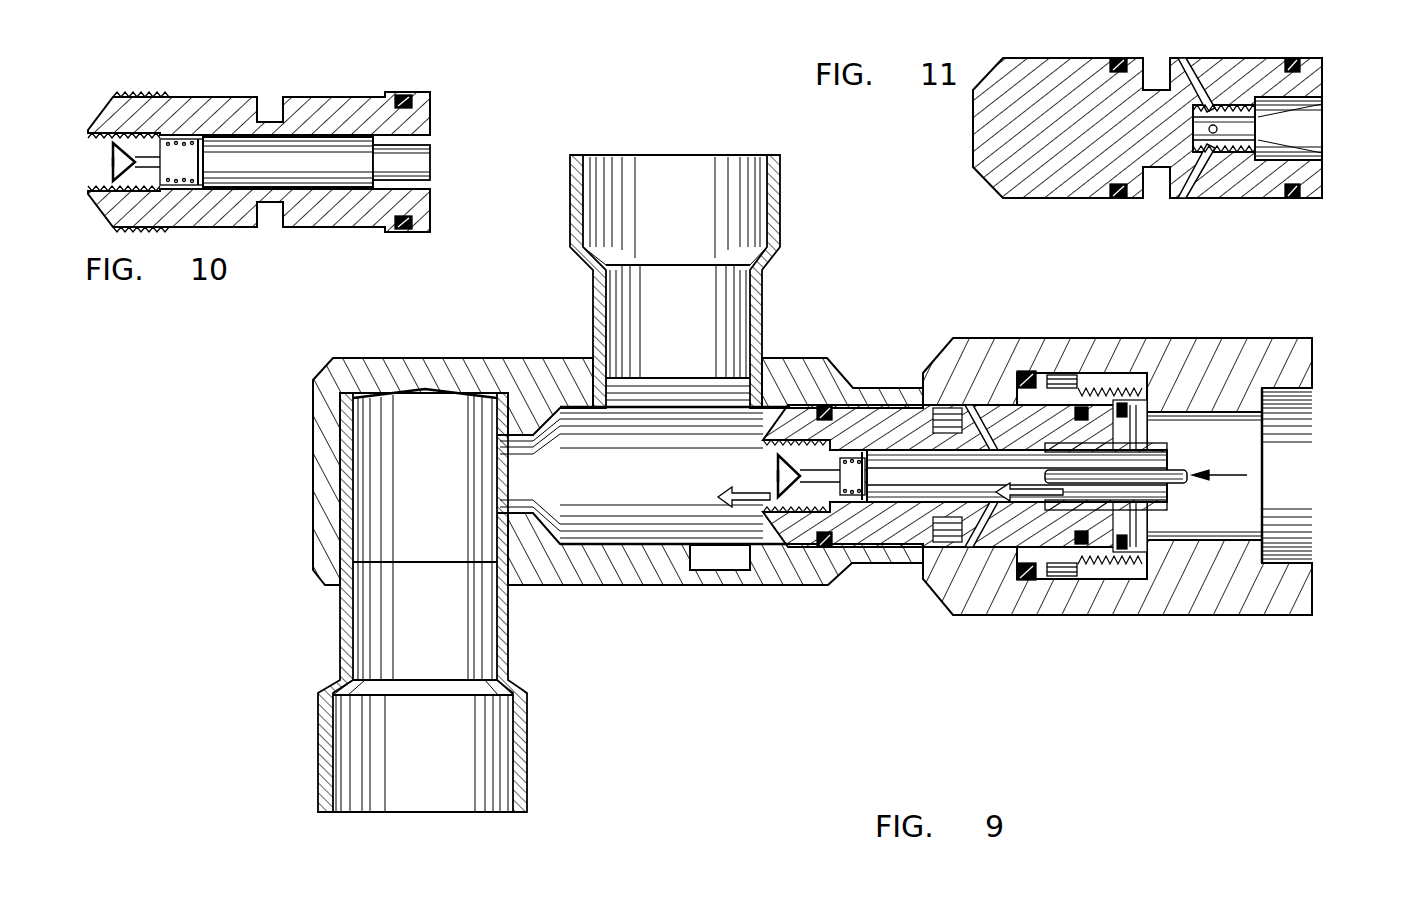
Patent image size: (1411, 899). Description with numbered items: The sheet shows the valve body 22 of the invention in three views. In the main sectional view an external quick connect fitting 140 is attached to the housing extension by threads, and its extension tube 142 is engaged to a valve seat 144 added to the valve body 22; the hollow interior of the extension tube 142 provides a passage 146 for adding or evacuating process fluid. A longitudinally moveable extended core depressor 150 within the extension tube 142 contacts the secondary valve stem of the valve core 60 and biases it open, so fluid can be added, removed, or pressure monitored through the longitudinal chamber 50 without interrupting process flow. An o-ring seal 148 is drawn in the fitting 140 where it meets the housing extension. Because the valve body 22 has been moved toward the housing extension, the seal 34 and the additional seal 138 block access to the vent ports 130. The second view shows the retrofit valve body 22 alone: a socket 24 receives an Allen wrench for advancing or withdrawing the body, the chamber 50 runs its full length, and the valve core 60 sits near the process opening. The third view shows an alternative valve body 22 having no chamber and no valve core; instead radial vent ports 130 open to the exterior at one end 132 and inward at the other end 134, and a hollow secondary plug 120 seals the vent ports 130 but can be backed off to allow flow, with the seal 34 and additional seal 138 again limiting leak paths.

In FIG. 10, the valve body 22 is at (222, 97).
In FIG. 11, the valve body 22 is at (1065, 165).
In FIG. 10, the socket 24 is at (427, 163).
In FIG. 11, the seal 34 is at (1292, 57).
In FIG. 10, the longitudinal chamber 50 is at (322, 165).
In FIG. 10, the valve core 60 is at (150, 128).
In FIG. 11, the secondary plug 120 is at (1323, 104).
In FIG. 9, the vent ports 130 is at (988, 412).
In FIG. 11, the vent ports 130 is at (1176, 160).
In FIG. 11, the end of vent port 132 is at (1192, 57).
In FIG. 9, the other end of vent port 134 is at (808, 547).
In FIG. 11, the other end of vent port 134 is at (1222, 100).
In FIG. 9, the additional seal 138 is at (828, 405).
In FIG. 11, the additional seal 138 is at (1118, 57).
In FIG. 9, the external quick connect fitting 140 is at (1187, 338).
In FIG. 9, the extension tube 142 is at (1170, 530).
In FIG. 9, the valve seat 144 is at (1170, 428).
In FIG. 9, the passage 146 is at (1172, 488).
In FIG. 9, the O-ring seal 148 is at (1020, 585).
In FIG. 9, the extended core depressor 150 is at (897, 498).